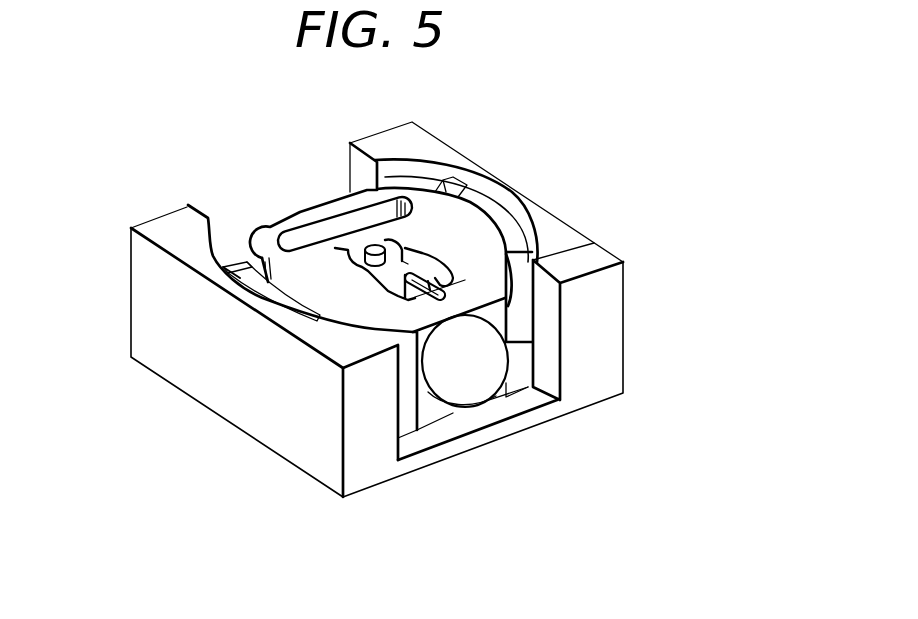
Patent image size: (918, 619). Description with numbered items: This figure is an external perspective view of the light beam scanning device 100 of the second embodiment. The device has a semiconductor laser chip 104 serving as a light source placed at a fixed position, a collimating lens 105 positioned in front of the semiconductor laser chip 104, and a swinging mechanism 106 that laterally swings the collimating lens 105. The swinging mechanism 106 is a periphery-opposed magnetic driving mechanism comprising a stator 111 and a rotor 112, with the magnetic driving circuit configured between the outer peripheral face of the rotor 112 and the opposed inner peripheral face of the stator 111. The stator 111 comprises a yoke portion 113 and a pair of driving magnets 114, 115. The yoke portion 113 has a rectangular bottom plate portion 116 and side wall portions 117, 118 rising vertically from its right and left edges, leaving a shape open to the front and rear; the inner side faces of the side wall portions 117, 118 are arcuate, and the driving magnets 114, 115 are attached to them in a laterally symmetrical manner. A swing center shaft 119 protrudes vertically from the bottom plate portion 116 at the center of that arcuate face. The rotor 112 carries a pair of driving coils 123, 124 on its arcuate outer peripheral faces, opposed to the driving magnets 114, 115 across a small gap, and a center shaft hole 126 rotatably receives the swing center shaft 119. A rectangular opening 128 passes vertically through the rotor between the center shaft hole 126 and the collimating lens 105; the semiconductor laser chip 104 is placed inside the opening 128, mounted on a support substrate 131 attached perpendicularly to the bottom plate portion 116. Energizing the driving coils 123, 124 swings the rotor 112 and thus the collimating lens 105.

The light beam scanning device 100 is at (663, 77).
The semiconductor laser chip 104 is at (413, 298).
The collimating lens 105 is at (468, 380).
The swinging mechanism 106 is at (603, 215).
The stator 111 is at (628, 318).
The rotor 112 is at (275, 216).
The yoke portion 113 is at (313, 480).
The driving magnet 114 is at (483, 196).
The driving magnet 115 is at (243, 275).
The bottom plate portion 116 is at (543, 412).
The side wall portion 117 is at (548, 218).
The side wall portion 118 is at (297, 323).
The swing center shaft 119 is at (371, 249).
The driving coil 123 is at (455, 178).
The driving coil 124 is at (257, 240).
The center shaft hole 126 is at (380, 246).
The rectangular opening 128 is at (423, 254).
The support substrate 131 is at (450, 288).